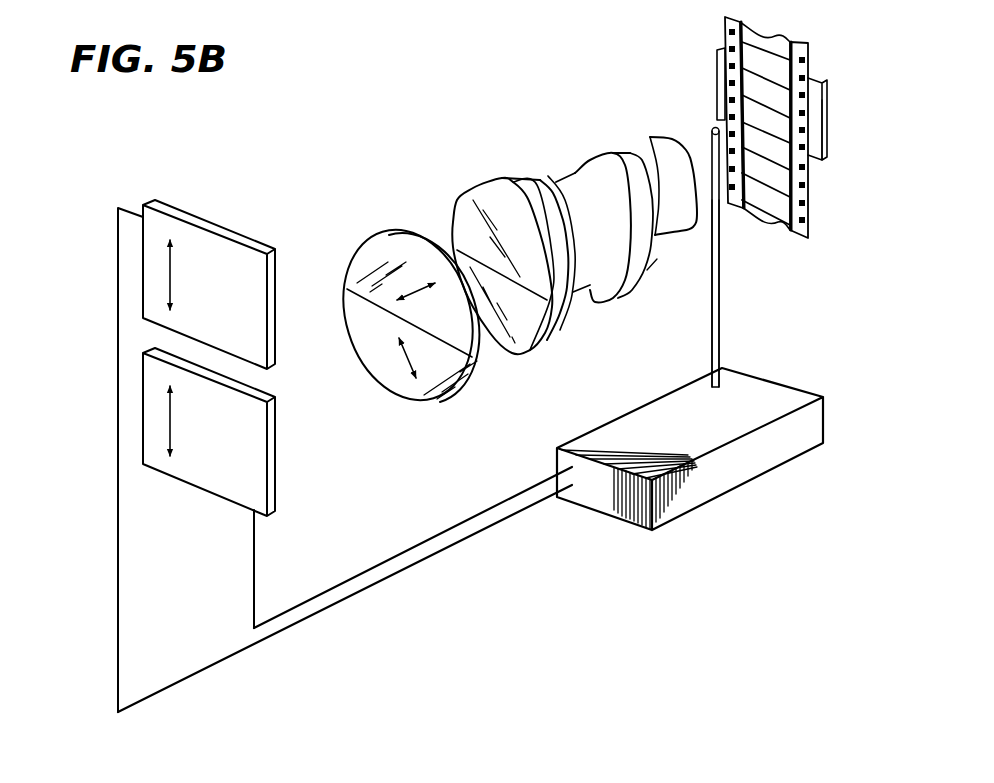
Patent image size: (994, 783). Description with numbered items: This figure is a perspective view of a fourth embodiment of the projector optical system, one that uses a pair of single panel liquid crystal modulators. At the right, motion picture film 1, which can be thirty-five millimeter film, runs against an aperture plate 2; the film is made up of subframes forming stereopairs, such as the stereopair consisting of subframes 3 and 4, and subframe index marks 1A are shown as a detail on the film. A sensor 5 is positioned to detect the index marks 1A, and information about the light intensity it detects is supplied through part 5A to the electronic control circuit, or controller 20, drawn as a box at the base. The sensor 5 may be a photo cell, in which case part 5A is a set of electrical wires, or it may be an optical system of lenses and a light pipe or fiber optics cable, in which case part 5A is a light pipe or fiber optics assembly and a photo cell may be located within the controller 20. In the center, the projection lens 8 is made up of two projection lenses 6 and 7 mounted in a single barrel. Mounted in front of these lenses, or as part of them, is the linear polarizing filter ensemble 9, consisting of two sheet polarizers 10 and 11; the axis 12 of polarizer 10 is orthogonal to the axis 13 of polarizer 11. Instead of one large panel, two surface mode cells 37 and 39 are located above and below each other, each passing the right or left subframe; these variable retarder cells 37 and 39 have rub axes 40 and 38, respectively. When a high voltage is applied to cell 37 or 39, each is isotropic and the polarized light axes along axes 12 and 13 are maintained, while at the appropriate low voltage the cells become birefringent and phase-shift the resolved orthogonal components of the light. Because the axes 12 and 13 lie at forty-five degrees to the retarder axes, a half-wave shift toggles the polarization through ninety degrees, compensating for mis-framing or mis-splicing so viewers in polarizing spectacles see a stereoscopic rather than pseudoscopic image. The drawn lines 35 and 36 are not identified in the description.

The motion picture film 1 is at (781, 119).
The subframe index marks 1A is at (728, 55).
The aperture plate 2 is at (827, 78).
The subframe 3 is at (810, 118).
The subframe 4 is at (777, 125).
The sensor 5 is at (711, 131).
The part 5A is at (719, 280).
The projection lens 6 is at (590, 163).
The projection lens 7 is at (553, 338).
The projection lens 8 is at (484, 181).
The linear polarizing filter ensemble 9 is at (411, 310).
The sheet polarizer 10 is at (360, 245).
The sheet polarizer 11 is at (460, 401).
The axis 12 is at (417, 283).
The axis 13 is at (408, 357).
The electronic control circuit 20 is at (738, 488).
The light guide 35 is at (432, 538).
The light guide 36 is at (338, 604).
The surface mode cell 37 is at (227, 500).
The rub axis 38 is at (168, 267).
The surface mode cell 39 is at (213, 222).
The rub axis 40 is at (168, 418).